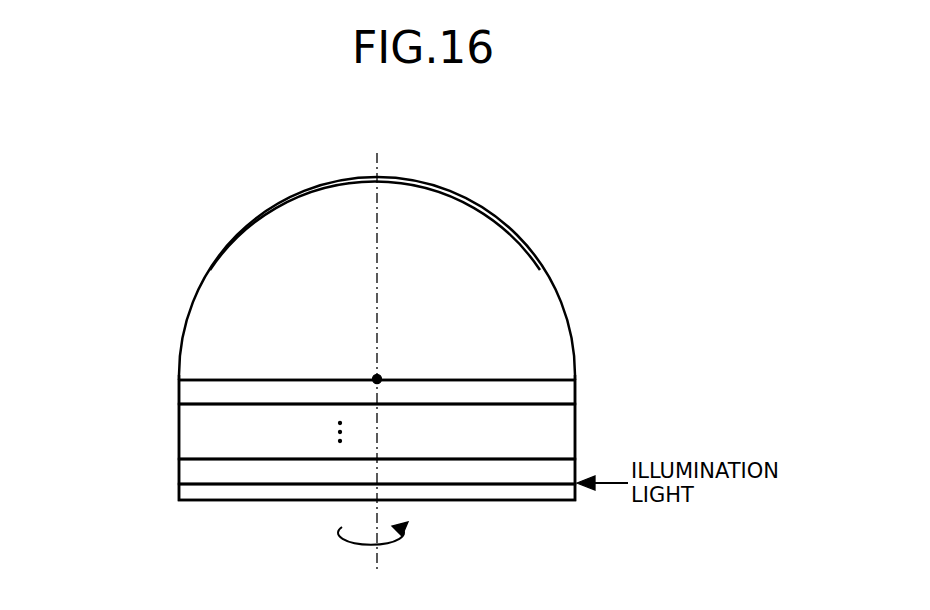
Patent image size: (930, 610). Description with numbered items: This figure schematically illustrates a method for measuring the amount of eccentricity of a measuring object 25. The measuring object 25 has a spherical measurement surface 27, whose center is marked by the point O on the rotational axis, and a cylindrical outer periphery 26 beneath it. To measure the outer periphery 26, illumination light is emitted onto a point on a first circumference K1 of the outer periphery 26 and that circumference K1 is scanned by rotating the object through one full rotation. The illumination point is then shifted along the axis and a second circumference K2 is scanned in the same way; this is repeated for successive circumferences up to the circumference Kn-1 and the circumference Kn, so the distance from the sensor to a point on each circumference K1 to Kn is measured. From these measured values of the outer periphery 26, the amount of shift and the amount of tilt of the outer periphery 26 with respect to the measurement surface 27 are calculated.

The measuring object 25 is at (513, 191).
The measurement surface 27 is at (523, 240).
The center of curvature O is at (377, 380).
The outer periphery 26 is at (575, 440).
The circumference Kn is at (213, 381).
The circumference Kn-1 is at (213, 405).
The circumference K2 is at (213, 460).
The circumference K1 is at (213, 485).